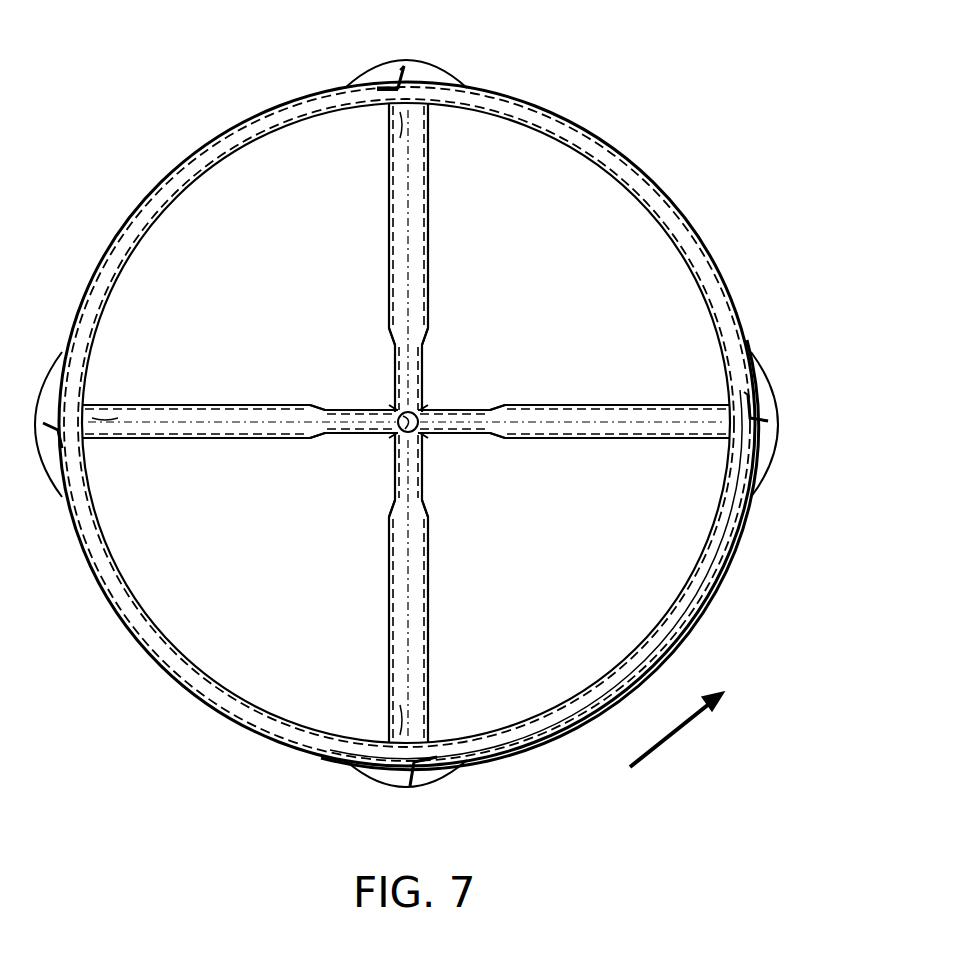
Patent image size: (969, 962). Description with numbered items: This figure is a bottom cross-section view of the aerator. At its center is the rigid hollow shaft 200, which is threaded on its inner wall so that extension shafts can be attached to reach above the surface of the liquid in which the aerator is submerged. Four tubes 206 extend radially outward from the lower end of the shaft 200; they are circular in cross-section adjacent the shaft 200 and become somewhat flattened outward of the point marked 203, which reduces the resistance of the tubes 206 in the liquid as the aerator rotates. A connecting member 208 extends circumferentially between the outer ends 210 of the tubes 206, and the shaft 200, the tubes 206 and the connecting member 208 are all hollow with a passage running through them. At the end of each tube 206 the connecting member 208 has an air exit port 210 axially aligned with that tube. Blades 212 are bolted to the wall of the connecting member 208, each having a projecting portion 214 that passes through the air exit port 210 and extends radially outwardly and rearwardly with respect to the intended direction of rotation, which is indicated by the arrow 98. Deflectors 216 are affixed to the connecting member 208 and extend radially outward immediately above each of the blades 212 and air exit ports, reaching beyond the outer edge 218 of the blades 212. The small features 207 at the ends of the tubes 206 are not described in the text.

The direction of rotation arrow 98 is at (682, 730).
The rigid hollow shaft 200 is at (420, 430).
The point 203 is at (426, 342).
The tubes 206 is at (426, 211).
The spoke end tab 207 is at (398, 120).
The connecting member 208 is at (176, 168).
The air exit port 210 is at (416, 78).
The blades 212 is at (400, 70).
The projecting portion 214 is at (394, 84).
The deflectors 216 is at (452, 770).
The outer edge 218 is at (766, 423).